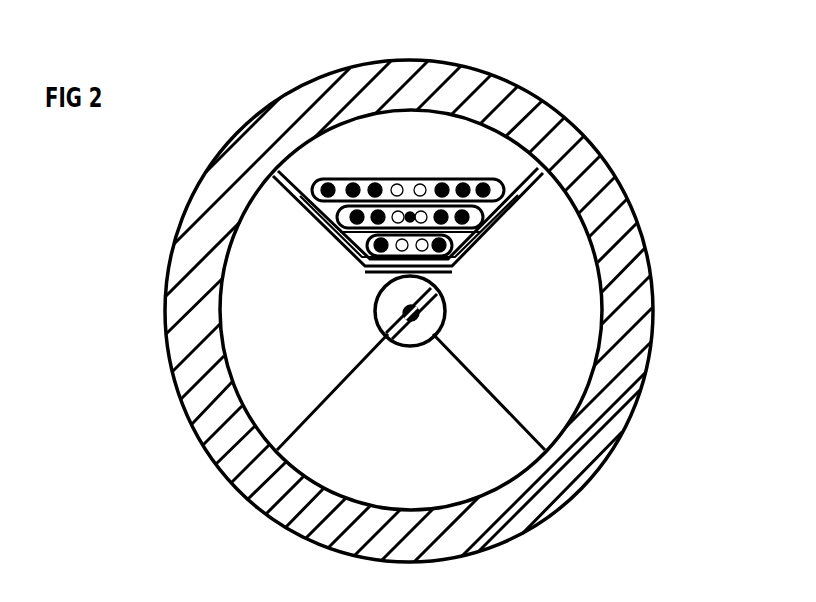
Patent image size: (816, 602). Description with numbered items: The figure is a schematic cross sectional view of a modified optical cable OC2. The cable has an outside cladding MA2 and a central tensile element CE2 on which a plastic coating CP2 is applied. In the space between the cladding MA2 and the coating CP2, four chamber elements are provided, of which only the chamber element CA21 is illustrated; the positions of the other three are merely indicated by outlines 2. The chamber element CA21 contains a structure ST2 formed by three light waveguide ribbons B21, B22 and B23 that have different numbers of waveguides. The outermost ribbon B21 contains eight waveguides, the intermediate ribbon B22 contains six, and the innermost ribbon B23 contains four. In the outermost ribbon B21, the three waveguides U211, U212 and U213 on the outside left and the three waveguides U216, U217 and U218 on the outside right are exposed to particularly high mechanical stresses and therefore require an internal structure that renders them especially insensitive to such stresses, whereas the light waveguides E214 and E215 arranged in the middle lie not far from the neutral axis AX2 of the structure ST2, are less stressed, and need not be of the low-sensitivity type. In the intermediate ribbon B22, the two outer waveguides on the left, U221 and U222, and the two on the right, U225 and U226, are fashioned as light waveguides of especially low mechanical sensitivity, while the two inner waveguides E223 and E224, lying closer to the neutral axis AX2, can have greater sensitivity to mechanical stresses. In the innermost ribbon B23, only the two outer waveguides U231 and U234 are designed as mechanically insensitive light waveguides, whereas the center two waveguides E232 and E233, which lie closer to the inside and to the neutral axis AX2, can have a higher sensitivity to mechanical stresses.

The optical cable OC2 is at (651, 389).
The outside cladding MA2 is at (636, 313).
The plastic coating CP2 is at (434, 300).
The central tensile element CE2 is at (398, 342).
The chamber element CA21 is at (338, 200).
The structure ST2 is at (318, 220).
The outermost light waveguide ribbon B21 is at (503, 185).
The intermediate light waveguide ribbon B22 is at (486, 216).
The innermost light waveguide ribbon B23 is at (455, 250).
The neutral axis AX2 is at (410, 212).
The light waveguide U211 is at (322, 184).
The light waveguide U212 is at (353, 183).
The light waveguide U213 is at (373, 182).
The light waveguide E214 is at (397, 183).
The light waveguide E215 is at (422, 183).
The light waveguide U216 is at (445, 183).
The light waveguide U217 is at (466, 183).
The light waveguide U218 is at (482, 183).
The light waveguide U221 is at (348, 220).
The light waveguide U222 is at (372, 226).
The light waveguide E223 is at (395, 226).
The light waveguide E224 is at (430, 214).
The light waveguide U225 is at (470, 212).
The light waveguide U226 is at (450, 222).
The light waveguide U231 is at (378, 254).
The light waveguide E232 is at (400, 253).
The light waveguide E233 is at (425, 253).
The light waveguide U234 is at (446, 252).
The outlines 2 is at (491, 406).